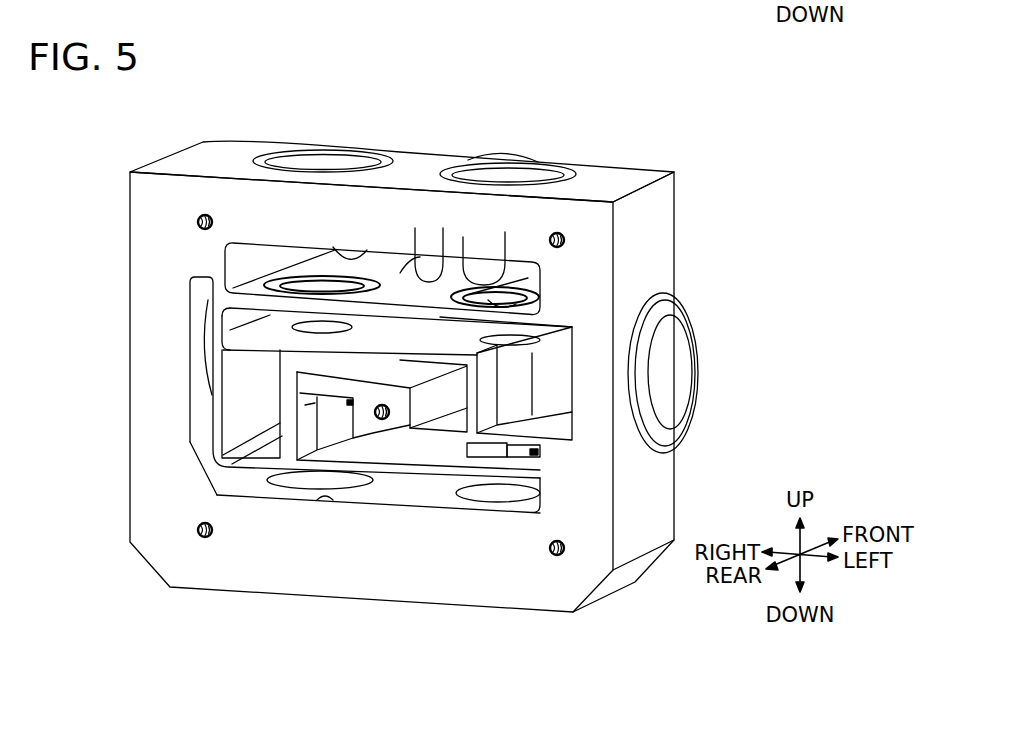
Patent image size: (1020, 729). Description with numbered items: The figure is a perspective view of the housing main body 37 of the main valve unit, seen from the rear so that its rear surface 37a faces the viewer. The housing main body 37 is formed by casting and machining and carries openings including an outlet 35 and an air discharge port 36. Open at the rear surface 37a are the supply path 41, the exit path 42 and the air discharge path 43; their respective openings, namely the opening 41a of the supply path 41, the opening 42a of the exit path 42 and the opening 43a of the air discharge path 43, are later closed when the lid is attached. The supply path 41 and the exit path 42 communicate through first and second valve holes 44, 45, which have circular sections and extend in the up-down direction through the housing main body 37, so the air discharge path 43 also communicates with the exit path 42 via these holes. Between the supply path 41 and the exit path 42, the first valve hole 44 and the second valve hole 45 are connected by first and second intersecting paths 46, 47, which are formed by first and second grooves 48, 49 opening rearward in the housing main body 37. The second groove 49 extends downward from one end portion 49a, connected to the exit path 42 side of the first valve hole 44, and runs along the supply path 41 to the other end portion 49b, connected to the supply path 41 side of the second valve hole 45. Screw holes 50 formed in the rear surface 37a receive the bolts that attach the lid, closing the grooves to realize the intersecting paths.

The outlet 35 is at (673, 414).
The air discharge port 36 is at (482, 275).
The housing main body 37 is at (202, 163).
The rear surface 37a is at (596, 252).
The supply path 41 is at (397, 487).
The opening of the supply path 41a is at (323, 498).
The exit path 42 is at (417, 283).
The opening of the exit path 42a is at (489, 300).
The air discharge path 43 is at (395, 262).
The opening of the air discharge path 43a is at (352, 258).
The first valve hole 44 is at (295, 272).
The second valve hole 45 is at (524, 276).
The first intersecting path 46 is at (388, 372).
The second intersecting path 47 is at (443, 452).
The first groove 48 is at (250, 392).
The second groove 49 is at (400, 452).
The one end portion of the second groove 49a is at (310, 414).
The other end portion of the second groove 49b is at (535, 457).
The screw holes 50 is at (197, 221).